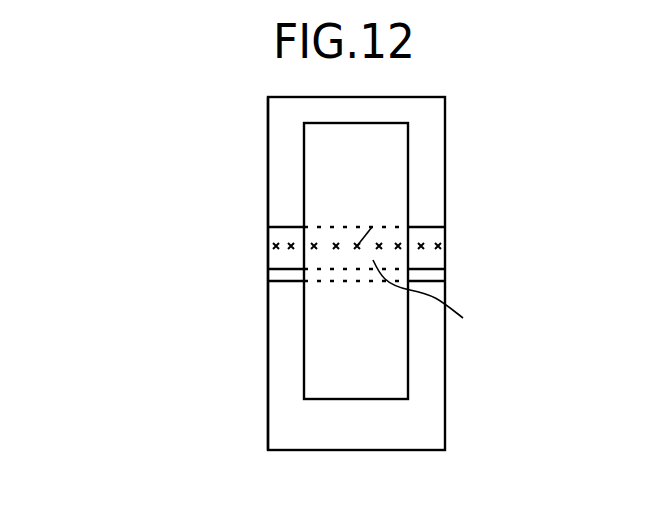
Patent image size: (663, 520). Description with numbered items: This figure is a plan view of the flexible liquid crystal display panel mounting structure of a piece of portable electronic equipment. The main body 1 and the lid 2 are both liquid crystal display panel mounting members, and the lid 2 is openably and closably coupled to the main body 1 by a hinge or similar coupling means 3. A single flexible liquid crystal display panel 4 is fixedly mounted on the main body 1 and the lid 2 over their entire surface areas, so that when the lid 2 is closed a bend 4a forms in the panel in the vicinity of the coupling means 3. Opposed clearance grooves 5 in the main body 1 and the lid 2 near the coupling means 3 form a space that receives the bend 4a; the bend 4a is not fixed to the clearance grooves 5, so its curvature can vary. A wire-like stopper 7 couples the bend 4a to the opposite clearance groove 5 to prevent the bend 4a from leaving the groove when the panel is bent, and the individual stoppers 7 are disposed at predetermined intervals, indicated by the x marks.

The main body 1 is at (276, 401).
The lid 2 is at (282, 152).
The coupling means 3 is at (440, 277).
The flexible liquid crystal display panel 4 is at (392, 152).
The bend 4a is at (437, 300).
The clearance grooves 5 is at (278, 259).
The stopper 7 is at (372, 227).